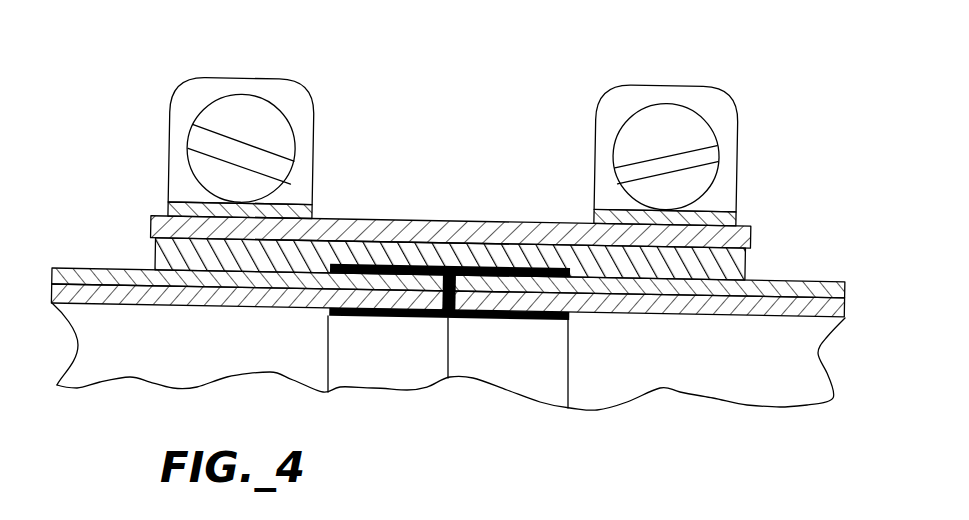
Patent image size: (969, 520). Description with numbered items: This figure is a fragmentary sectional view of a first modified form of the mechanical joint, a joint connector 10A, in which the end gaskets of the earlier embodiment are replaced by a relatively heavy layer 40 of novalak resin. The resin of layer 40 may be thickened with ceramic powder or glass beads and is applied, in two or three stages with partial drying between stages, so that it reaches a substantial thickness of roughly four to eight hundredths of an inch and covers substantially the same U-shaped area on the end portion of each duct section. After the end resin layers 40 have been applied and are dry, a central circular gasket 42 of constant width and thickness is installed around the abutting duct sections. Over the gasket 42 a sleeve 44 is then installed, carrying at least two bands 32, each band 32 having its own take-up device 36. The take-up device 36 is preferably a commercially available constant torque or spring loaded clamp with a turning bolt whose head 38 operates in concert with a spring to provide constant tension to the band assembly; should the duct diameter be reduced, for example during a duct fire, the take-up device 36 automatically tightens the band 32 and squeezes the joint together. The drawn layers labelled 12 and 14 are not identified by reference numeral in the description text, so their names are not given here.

The joint connector 10A is at (440, 90).
The printed circuit board 12 is at (128, 268).
The board lower layer 14 is at (818, 280).
The band 32 is at (740, 217).
The take-up device 36 is at (735, 99).
The head 38 is at (658, 120).
The layer of novalak resin 40 is at (327, 311).
The central circular gasket 42 is at (747, 268).
The sleeve 44 is at (412, 221).